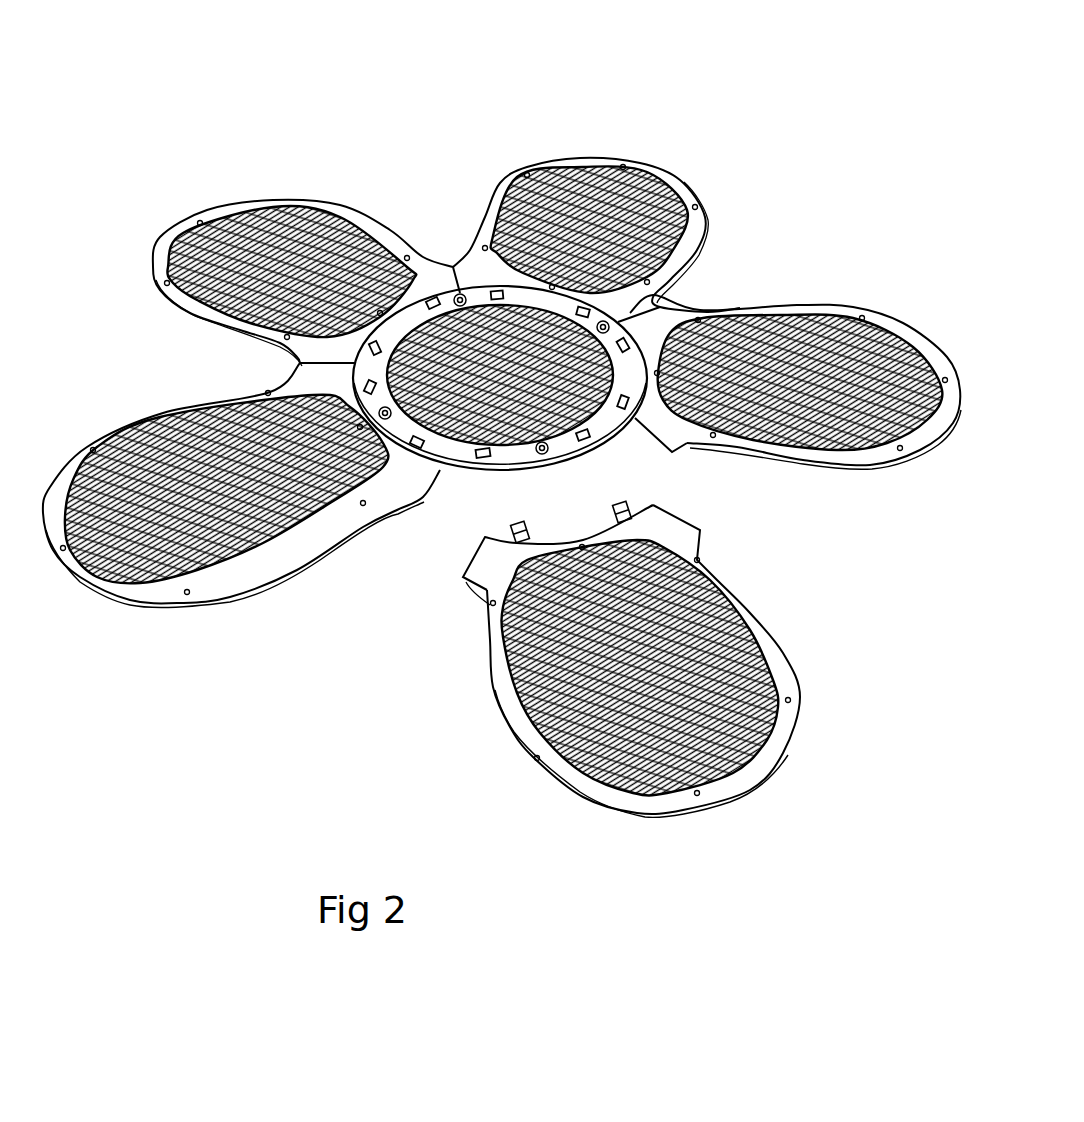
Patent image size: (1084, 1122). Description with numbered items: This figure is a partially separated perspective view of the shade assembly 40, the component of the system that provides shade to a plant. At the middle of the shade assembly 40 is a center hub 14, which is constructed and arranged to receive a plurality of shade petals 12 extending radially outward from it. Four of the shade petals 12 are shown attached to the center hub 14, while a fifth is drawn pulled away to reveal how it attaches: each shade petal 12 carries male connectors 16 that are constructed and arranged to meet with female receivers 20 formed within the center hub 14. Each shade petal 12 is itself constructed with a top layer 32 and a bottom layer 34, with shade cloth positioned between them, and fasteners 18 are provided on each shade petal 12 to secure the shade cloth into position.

The shade petal 12 is at (147, 415).
The center hub 14 is at (610, 447).
The male connector 16 is at (613, 515).
The fastener 18 is at (801, 413).
The female receiver 20 is at (487, 458).
The top layer 32 is at (795, 360).
The bottom layer 34 is at (825, 454).
The shade assembly 40 is at (590, 156).